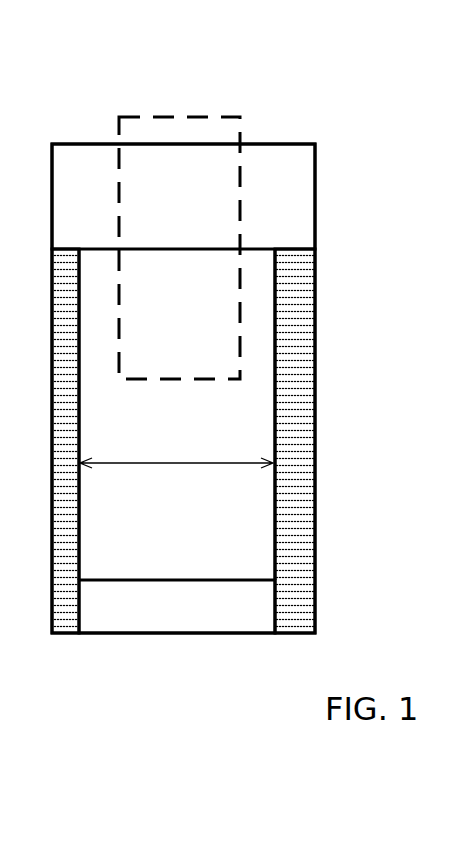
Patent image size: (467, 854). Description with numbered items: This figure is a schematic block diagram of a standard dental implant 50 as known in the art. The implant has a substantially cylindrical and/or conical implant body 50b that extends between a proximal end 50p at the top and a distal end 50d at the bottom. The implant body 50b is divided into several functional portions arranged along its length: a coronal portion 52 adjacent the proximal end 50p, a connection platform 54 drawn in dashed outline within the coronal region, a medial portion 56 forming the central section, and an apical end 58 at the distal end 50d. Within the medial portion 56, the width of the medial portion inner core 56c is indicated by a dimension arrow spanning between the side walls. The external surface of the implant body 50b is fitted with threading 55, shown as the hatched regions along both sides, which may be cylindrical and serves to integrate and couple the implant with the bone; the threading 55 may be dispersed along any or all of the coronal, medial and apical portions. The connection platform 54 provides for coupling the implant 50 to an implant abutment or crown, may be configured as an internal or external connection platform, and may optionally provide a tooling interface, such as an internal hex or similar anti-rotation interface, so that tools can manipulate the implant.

The dental implant 50 is at (352, 76).
The proximal end 50p is at (69, 126).
The implant body 50b is at (350, 301).
The distal end 50d is at (94, 652).
The coronal portion 52 is at (310, 217).
The connection platform 54 is at (113, 205).
The primary threading 55 is at (302, 338).
The medial portion 56 is at (251, 527).
The medial portion inner core 56c is at (127, 463).
The apical end 58 is at (155, 623).